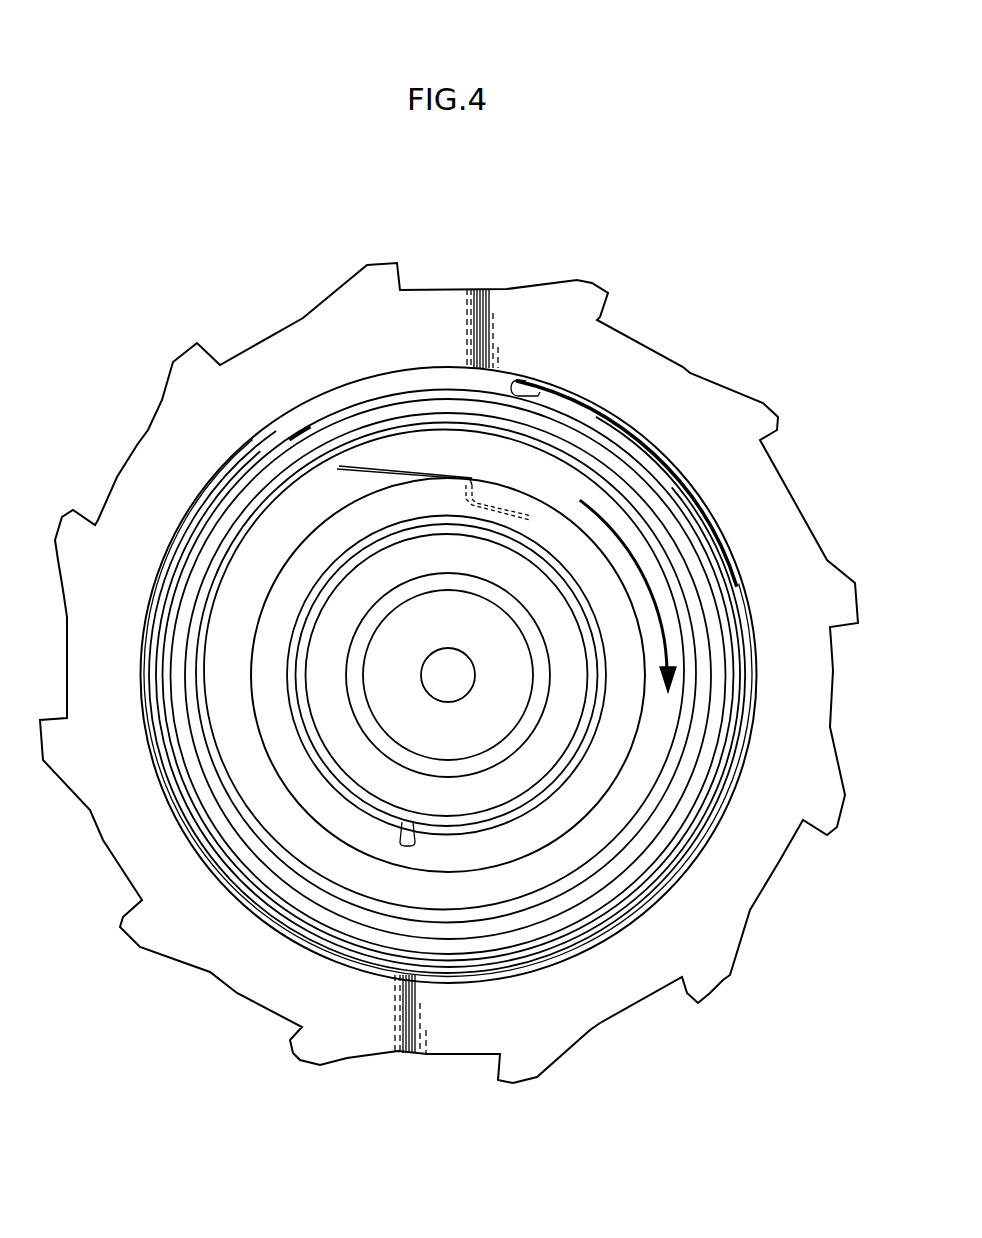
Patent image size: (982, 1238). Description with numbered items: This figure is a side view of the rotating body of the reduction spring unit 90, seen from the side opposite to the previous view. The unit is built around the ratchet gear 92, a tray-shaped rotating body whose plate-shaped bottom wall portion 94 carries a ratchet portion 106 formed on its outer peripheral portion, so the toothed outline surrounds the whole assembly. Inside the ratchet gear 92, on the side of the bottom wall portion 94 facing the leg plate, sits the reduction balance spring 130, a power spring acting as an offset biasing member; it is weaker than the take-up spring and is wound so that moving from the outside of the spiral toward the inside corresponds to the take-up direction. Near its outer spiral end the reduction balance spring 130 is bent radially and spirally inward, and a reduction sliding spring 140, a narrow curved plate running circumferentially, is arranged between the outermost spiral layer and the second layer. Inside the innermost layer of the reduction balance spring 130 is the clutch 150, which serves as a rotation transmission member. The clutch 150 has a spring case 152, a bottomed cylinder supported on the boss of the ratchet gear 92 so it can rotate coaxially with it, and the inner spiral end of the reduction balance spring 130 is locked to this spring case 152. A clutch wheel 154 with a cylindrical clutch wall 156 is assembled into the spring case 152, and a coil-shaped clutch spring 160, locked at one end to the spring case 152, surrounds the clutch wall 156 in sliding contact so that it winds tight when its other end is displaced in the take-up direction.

The reduction spring unit 90 is at (449, 625).
The ratchet gear 92 is at (685, 367).
The bottom wall portion 94 is at (445, 378).
The ratchet portion 106 is at (350, 1060).
The reduction balance spring 130 is at (365, 397).
The reduction sliding spring 140 is at (287, 432).
The clutch 150 is at (313, 830).
The spring case 152 is at (287, 787).
The clutch wheel 154 is at (475, 795).
The clutch wall 156 is at (473, 794).
The clutch spring 160 is at (575, 752).